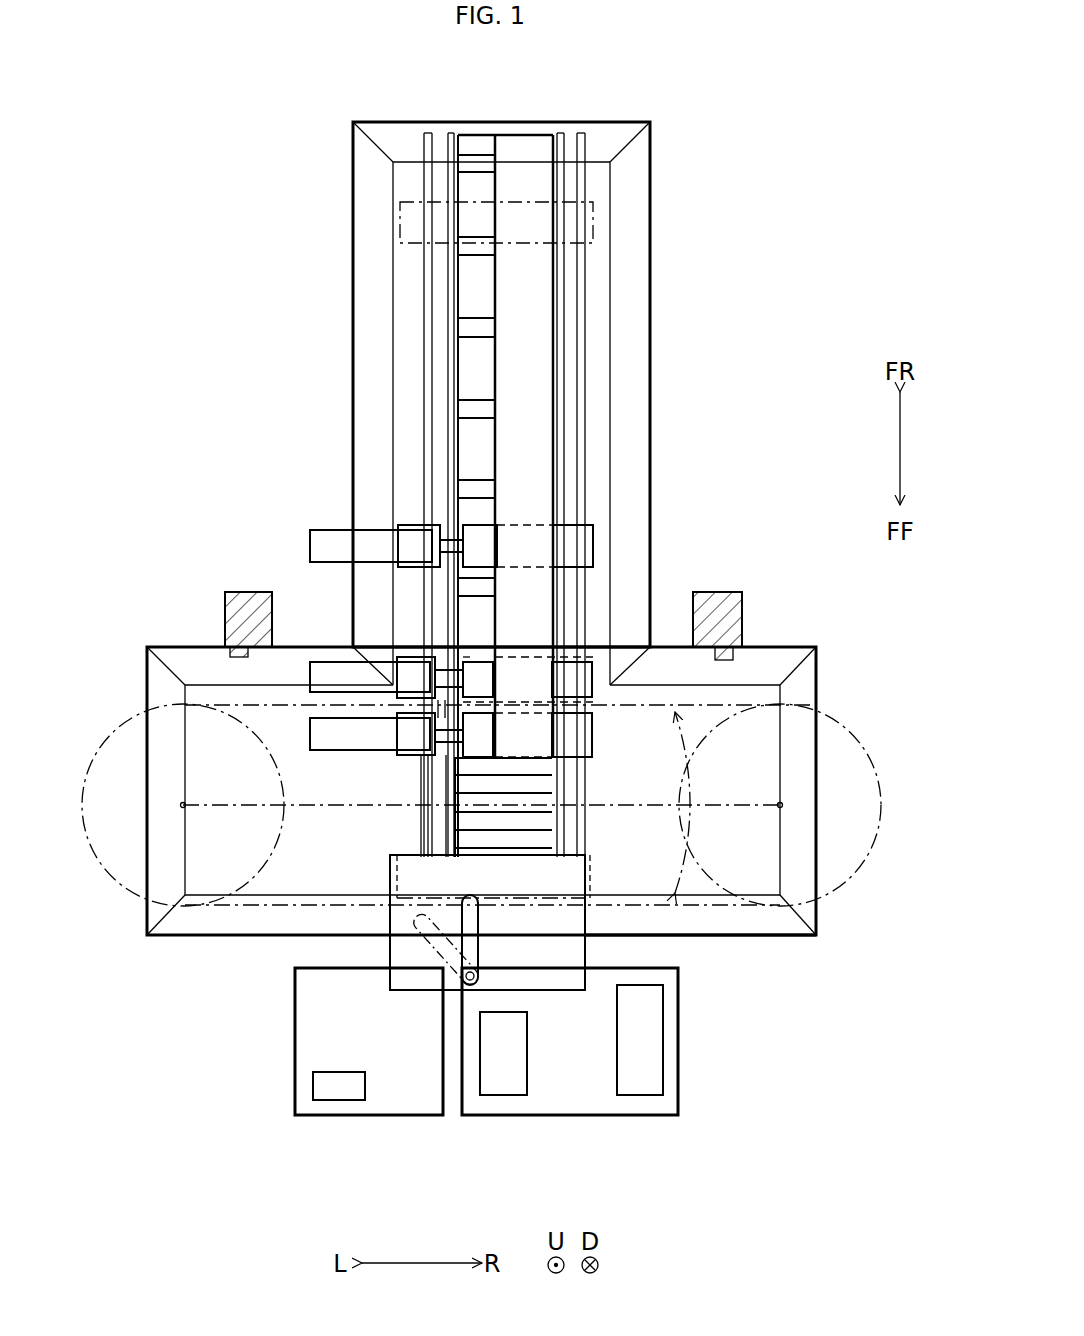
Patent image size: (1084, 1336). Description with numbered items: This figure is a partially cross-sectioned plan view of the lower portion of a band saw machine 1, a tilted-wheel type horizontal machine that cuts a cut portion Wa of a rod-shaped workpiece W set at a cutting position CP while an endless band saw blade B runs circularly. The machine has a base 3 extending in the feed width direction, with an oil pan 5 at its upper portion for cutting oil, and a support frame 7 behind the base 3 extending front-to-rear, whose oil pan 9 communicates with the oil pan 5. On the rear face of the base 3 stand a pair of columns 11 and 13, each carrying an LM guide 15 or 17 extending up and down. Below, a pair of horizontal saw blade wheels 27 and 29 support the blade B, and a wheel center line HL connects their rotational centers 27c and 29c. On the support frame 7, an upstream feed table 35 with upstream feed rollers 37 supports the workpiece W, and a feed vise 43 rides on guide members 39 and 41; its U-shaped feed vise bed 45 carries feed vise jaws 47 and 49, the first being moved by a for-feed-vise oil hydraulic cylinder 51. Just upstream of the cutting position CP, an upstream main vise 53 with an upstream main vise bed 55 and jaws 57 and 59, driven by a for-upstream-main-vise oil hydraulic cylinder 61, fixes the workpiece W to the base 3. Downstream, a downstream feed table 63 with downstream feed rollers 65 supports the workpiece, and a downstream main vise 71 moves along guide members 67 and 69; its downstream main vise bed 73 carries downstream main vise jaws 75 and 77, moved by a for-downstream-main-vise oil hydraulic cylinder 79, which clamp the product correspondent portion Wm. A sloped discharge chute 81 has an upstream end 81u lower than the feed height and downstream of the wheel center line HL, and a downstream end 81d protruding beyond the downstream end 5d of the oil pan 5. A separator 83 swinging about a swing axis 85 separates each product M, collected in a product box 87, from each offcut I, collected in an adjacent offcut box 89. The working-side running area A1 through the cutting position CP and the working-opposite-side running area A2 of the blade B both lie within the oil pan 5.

The band saw machine 1 is at (756, 357).
The base 3 is at (248, 940).
The oil pan 5 is at (168, 936).
The downstream end of the oil pan 5d is at (786, 937).
The support frame 7 is at (350, 277).
The oil pan 9 is at (366, 366).
The column 11 is at (226, 610).
The column 13 is at (742, 610).
The LM guide 15 is at (236, 655).
The LM guide 17 is at (726, 658).
The first saw blade wheel 27 is at (110, 878).
The rotational center 27c is at (183, 805).
The second saw blade wheel 29 is at (850, 880).
The rotational center 29c is at (780, 805).
The upstream feed table 35 is at (445, 322).
The upstream feed rollers 37 is at (478, 160).
The guide member 39 is at (426, 410).
The guide member 41 is at (585, 371).
The feed vise 43 is at (600, 218).
The feed vise bed 45 is at (405, 222).
The first feed vise jaw 47 is at (485, 545).
The second feed vise jaw 49 is at (580, 548).
The for-feed-vise oil hydraulic cylinder 51 is at (315, 548).
The upstream main vise 53 is at (470, 653).
The upstream main vise bed 55 is at (470, 666).
The first upstream main vise jaw 57 is at (478, 665).
The second upstream main vise jaw 59 is at (560, 668).
The for-upstream-main-vise oil hydraulic cylinder 61 is at (310, 678).
The downstream feed table 63 is at (452, 812).
The downstream feed rollers 65 is at (555, 815).
The guide member 67 is at (436, 848).
The guide member 69 is at (557, 845).
The downstream main vise 71 is at (445, 776).
The downstream main vise bed 73 is at (435, 753).
The first downstream main vise jaw 75 is at (480, 746).
The second downstream main vise jaw 77 is at (585, 745).
The for-downstream-main-vise oil hydraulic cylinder 79 is at (312, 735).
The discharge chute 81 is at (588, 915).
The upstream end 81u is at (580, 863).
The downstream end 81d is at (570, 992).
The separator 83 is at (462, 930).
The swing axis 85 is at (462, 978).
The product box 87 is at (560, 1117).
The offcut box 89 is at (400, 1117).
The working-side running area A1 is at (699, 802).
The working-opposite-side running area A2 is at (722, 834).
The band saw blade B is at (708, 938).
The cutting position CP is at (533, 700).
The wheel center line HL is at (748, 803).
The offcut I is at (335, 1101).
The product M is at (503, 1098).
The workpiece W is at (537, 440).
The cut portion Wa is at (555, 718).
The product correspondent portion Wm is at (560, 768).